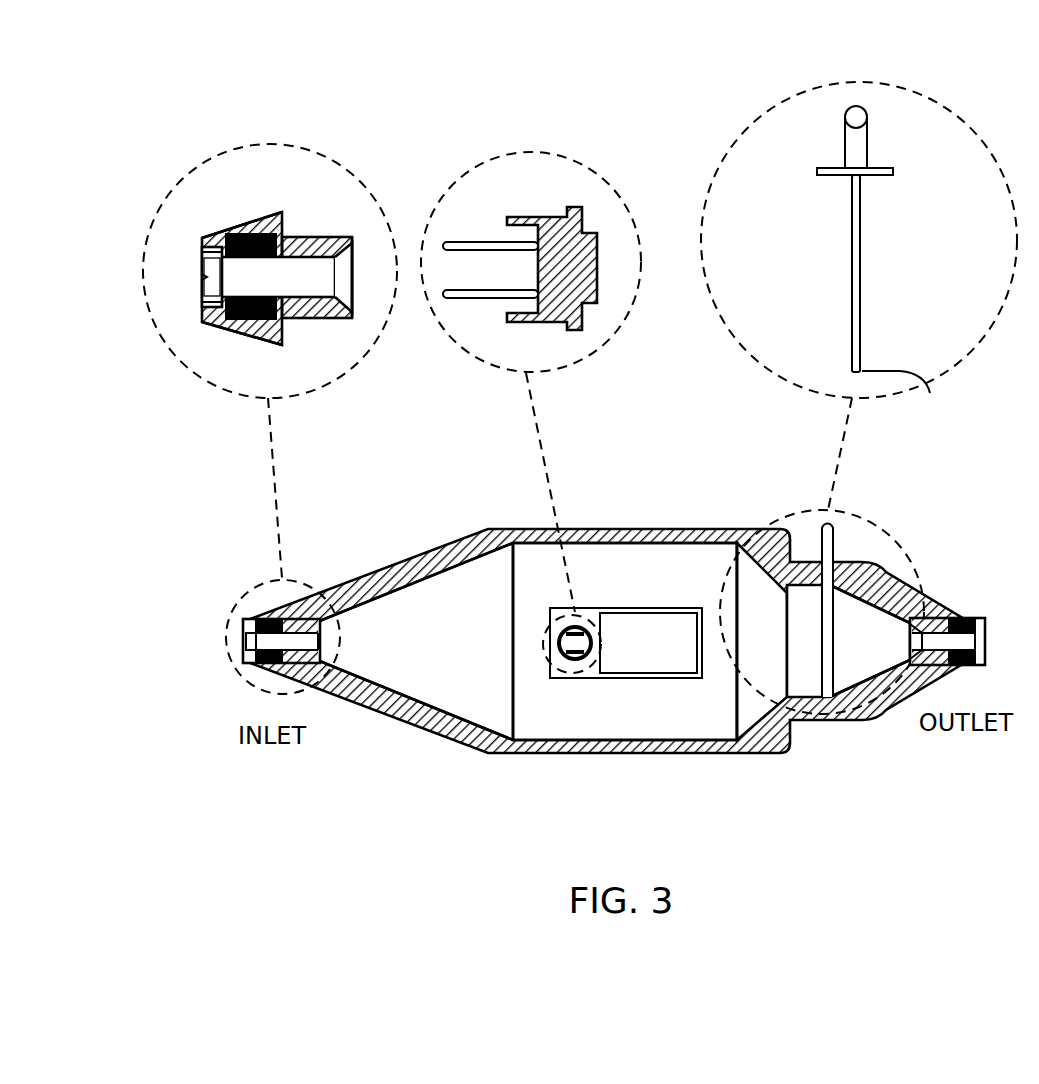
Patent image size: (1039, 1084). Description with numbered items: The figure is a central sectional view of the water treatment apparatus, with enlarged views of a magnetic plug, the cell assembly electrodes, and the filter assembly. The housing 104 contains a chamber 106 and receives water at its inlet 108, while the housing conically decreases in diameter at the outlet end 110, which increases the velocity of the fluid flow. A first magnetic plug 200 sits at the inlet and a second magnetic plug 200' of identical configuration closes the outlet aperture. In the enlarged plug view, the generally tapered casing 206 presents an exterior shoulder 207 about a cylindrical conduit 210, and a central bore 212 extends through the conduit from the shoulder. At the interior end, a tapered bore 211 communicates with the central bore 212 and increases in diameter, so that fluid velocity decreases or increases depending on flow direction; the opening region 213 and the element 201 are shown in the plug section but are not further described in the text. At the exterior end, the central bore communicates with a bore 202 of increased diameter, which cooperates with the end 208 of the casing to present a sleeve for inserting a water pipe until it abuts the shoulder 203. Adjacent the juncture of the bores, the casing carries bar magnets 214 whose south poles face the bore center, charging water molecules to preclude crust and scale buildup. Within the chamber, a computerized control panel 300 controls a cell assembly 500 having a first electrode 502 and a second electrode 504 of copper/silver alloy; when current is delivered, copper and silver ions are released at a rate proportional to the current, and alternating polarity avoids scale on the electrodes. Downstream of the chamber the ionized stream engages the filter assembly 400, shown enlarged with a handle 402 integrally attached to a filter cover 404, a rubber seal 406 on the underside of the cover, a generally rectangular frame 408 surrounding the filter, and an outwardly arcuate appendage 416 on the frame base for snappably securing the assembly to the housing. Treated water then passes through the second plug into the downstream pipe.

The housing 104 is at (596, 477).
The chamber 106 is at (648, 575).
The inlet 108 is at (350, 648).
The outlet end 110 is at (885, 648).
The first magnetic plug 200 is at (270, 368).
The second magnetic plug 200' is at (972, 591).
The nut body 201 is at (204, 277).
The bore 202 is at (208, 296).
The shoulder 203 is at (202, 256).
The casing 206 is at (257, 222).
The exterior shoulder 207 is at (281, 337).
The end of casing 208 is at (200, 242).
The cylindrical conduit 210 is at (333, 237).
The tapered bore 211 is at (347, 297).
The central bore 212 is at (277, 277).
The outlet opening 213 is at (357, 262).
The bar magnets 214 is at (222, 233).
The computerized control panel 300 is at (631, 663).
The filter assembly 400 is at (782, 97).
The handle 402 is at (858, 116).
The filter cover 404 is at (889, 170).
The rubber seal 406 is at (828, 176).
The frame 408 is at (855, 287).
The arcuate appendage 416 is at (907, 397).
The cell assembly 500 is at (553, 245).
The first electrode 502 is at (474, 243).
The second electrode 504 is at (478, 293).